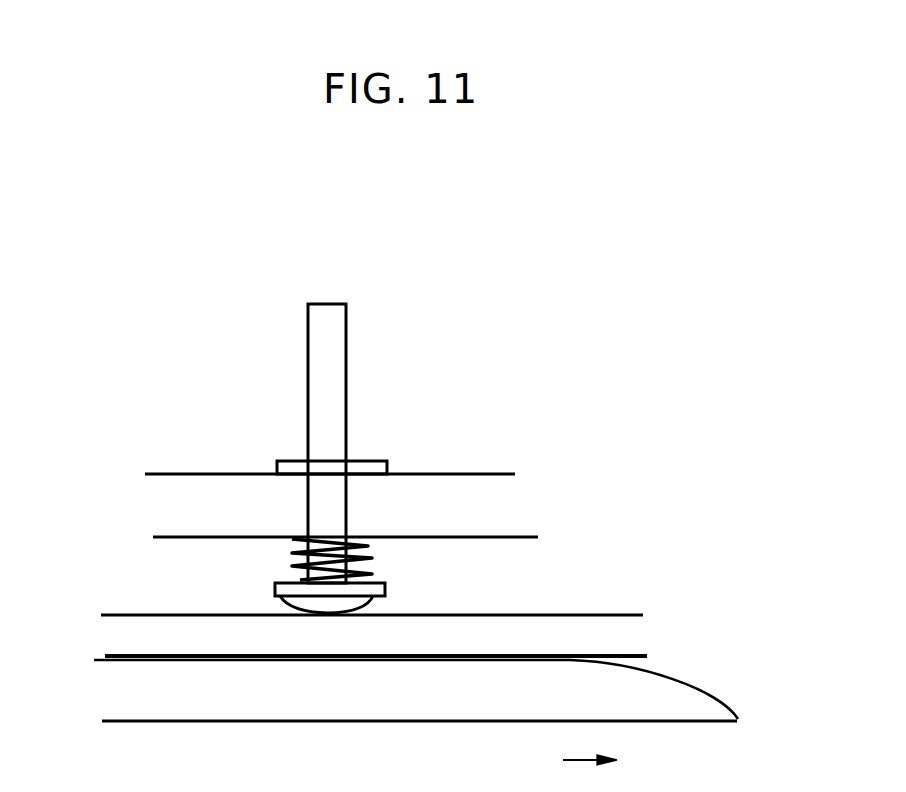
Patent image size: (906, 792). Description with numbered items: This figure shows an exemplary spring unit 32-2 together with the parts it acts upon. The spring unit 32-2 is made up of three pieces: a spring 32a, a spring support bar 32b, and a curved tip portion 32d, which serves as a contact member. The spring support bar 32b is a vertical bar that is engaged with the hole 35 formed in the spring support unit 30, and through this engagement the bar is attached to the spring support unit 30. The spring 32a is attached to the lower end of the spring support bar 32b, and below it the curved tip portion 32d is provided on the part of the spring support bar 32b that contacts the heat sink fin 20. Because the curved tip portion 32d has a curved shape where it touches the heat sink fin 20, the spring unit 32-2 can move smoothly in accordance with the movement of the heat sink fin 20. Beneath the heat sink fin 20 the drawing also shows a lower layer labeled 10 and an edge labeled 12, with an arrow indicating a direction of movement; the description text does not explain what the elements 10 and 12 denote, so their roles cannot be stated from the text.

The substrate 10 is at (440, 721).
The film 12 is at (703, 680).
The heat sink fin 20 is at (622, 615).
The spring support unit 30 is at (497, 474).
The spring unit 32-2 is at (331, 254).
The spring 32a is at (374, 558).
The spring support bar 32b is at (307, 354).
The curved tip portion 32d is at (295, 607).
The hole 35 is at (350, 510).